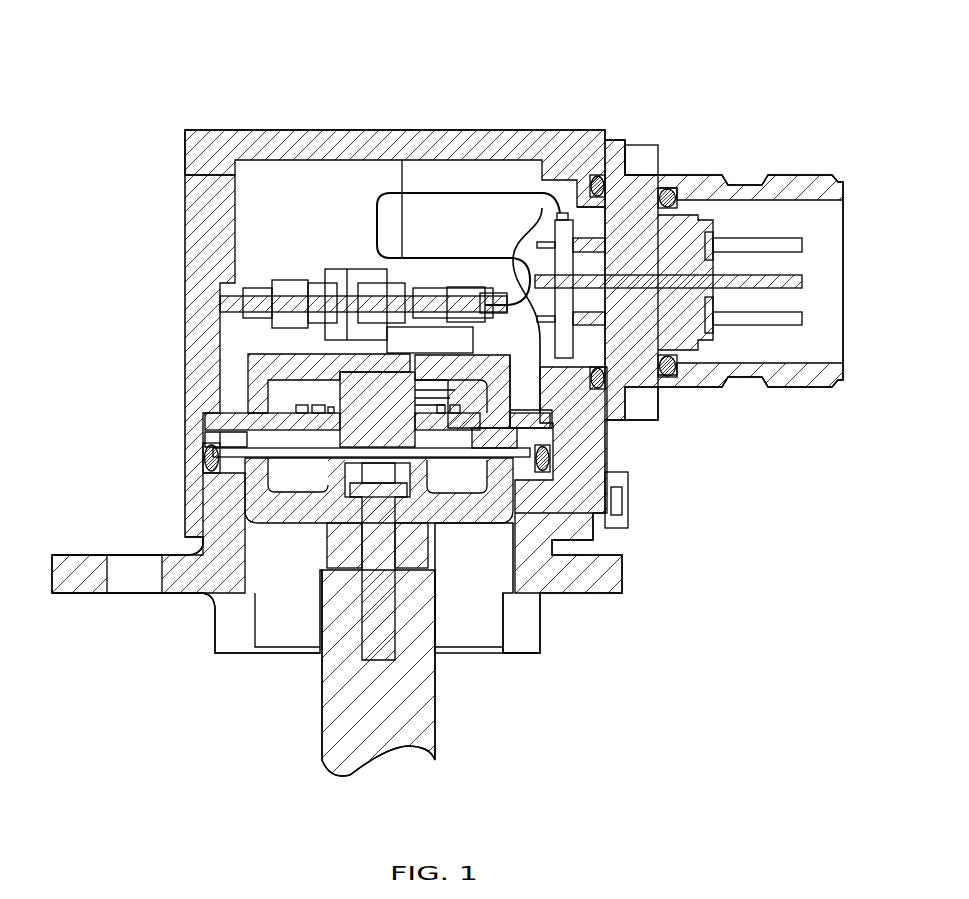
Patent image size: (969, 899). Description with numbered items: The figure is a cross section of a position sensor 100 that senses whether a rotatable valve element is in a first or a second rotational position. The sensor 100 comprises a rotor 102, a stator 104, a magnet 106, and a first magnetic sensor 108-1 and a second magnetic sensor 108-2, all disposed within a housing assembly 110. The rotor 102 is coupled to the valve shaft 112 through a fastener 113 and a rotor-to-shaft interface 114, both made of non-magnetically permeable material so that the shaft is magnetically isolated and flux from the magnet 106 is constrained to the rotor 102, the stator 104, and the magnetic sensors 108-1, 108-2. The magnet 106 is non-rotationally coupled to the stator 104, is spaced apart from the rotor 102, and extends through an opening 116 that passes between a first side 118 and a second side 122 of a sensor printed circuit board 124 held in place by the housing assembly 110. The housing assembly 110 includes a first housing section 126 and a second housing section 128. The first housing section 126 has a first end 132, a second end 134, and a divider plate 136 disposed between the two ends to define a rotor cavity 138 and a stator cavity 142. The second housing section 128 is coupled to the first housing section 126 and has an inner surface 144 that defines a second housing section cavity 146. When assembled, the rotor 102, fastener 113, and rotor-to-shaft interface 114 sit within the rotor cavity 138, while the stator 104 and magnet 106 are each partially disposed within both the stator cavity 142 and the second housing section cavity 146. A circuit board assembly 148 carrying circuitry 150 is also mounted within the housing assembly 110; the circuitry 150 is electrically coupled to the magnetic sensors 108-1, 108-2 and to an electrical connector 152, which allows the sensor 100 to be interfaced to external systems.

The position sensor 100 is at (700, 92).
The rotor 102 is at (449, 532).
The stator 104 is at (245, 363).
The magnet 106 is at (398, 443).
The first magnetic sensor 108-1 is at (237, 438).
The second magnetic sensor 108-2 is at (512, 442).
The housing assembly 110 is at (165, 272).
The valve shaft 112 is at (322, 728).
The fastener 113 is at (362, 598).
The rotor-to-shaft interface 114 is at (328, 558).
The opening 116 is at (413, 420).
The first side 118 is at (525, 420).
The second side 122 is at (435, 440).
The sensor printed circuit board 124 is at (543, 418).
The first housing section 126 is at (617, 578).
The second housing section 128 is at (218, 129).
The first end 132 is at (213, 423).
The second end 134 is at (528, 657).
The divider plate 136 is at (293, 460).
The rotor cavity 138 is at (497, 552).
The stator cavity 142 is at (247, 463).
The inner surface 144 is at (268, 165).
The second housing section cavity 146 is at (356, 177).
The circuit board assembly 148 is at (230, 300).
The circuitry 150 is at (323, 256).
The electrical connector 152 is at (716, 222).